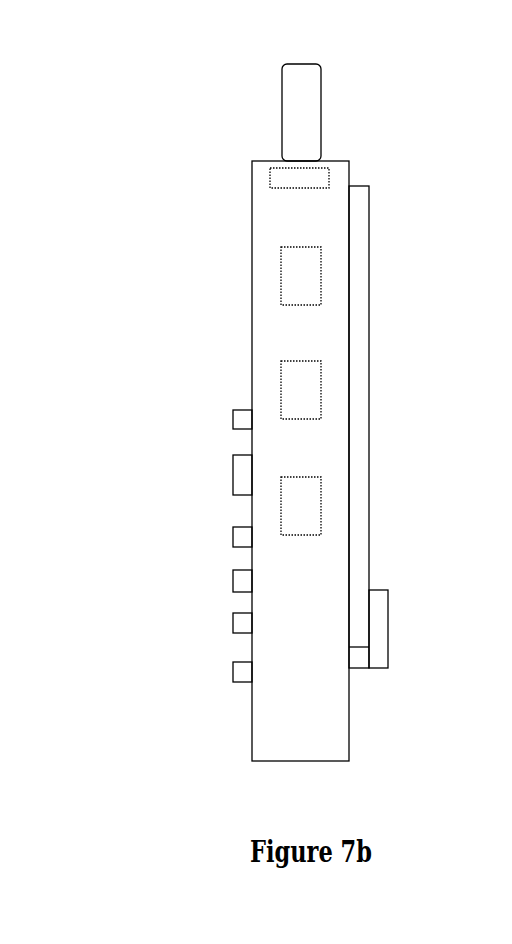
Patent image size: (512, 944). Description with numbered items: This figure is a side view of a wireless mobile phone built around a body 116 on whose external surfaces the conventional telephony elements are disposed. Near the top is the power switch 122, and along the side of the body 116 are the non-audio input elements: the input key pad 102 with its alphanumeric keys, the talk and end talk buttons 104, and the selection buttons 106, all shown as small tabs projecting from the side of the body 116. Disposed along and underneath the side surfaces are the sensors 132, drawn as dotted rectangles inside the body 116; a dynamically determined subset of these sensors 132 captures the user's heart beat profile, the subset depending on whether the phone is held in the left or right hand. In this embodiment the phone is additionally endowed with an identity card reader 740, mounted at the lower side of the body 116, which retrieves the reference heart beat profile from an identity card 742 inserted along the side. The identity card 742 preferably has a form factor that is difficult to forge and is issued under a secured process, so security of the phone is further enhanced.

The input key pad 102 is at (223, 543).
The talk and end talk buttons 104 is at (243, 470).
The selection buttons 106 is at (231, 412).
The body 116 is at (328, 352).
The power switch 122 is at (325, 168).
The sensors 132 is at (282, 378).
The identity card reader 740 is at (389, 630).
The identity card 742 is at (368, 298).